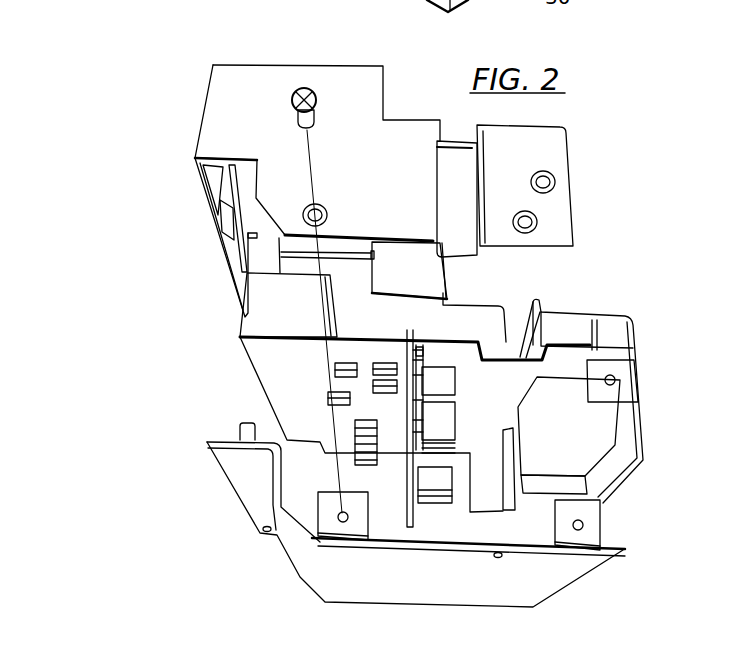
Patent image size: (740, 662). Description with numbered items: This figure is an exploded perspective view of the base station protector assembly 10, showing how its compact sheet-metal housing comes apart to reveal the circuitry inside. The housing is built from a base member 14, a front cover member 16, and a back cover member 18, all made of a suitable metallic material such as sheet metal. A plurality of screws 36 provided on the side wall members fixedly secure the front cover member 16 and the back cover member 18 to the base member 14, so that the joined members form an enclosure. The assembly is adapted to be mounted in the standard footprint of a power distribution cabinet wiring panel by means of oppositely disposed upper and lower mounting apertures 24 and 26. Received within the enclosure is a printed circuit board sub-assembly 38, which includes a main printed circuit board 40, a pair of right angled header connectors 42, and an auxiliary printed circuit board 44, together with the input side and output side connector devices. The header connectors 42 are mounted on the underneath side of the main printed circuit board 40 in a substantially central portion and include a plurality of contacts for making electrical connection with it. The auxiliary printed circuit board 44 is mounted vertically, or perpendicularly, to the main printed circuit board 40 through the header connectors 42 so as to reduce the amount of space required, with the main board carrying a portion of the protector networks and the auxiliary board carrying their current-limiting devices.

The base station protector assembly 10 is at (105, 191).
The base member 14 is at (304, 577).
The front cover member 16 is at (616, 304).
The back cover member 18 is at (201, 109).
The upper mounting aperture 24 is at (502, 561).
The lower mounting aperture 26 is at (266, 534).
The screw 36 is at (293, 92).
The printed circuit board sub-assembly 38 is at (259, 379).
The main printed circuit board 40 is at (262, 353).
The right angled header connector 42 is at (412, 346).
The auxiliary printed circuit board 44 is at (412, 513).